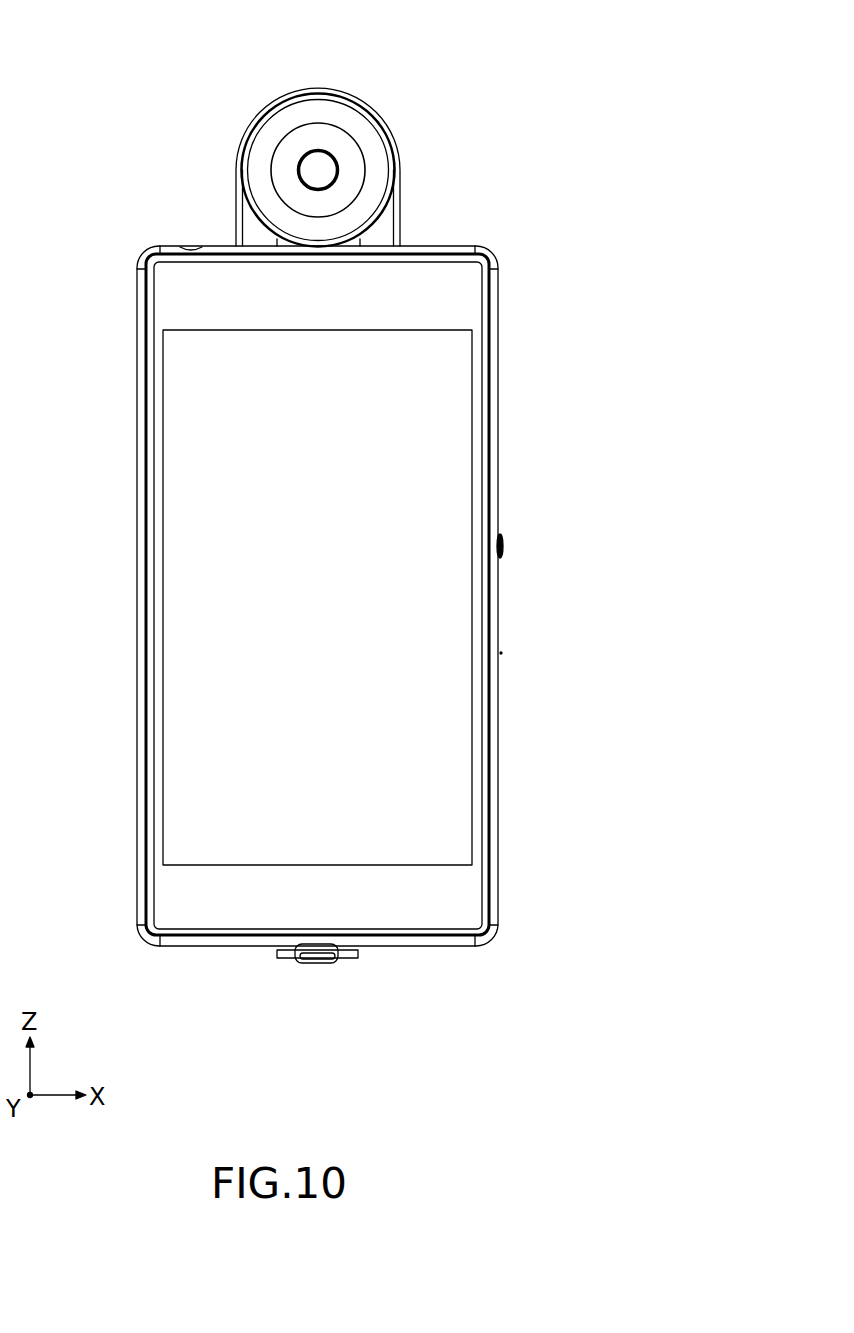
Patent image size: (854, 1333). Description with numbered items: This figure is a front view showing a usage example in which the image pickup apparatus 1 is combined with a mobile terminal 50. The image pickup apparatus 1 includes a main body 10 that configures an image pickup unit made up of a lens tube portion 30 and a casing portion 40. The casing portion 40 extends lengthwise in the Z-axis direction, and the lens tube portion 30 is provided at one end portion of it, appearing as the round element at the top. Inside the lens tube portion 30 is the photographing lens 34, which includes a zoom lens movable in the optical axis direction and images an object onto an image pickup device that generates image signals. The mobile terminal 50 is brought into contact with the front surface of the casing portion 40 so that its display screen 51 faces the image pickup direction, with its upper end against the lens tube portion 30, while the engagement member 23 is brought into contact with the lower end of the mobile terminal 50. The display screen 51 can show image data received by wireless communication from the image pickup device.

The image pickup apparatus 1 is at (464, 85).
The main body 10 is at (150, 95).
The lens tube portion 30 is at (257, 148).
The photographing lens 34 is at (327, 152).
The casing portion 40 is at (256, 233).
The mobile terminal 50 is at (131, 481).
The display screen 51 is at (333, 602).
The engagement member 23 is at (302, 964).